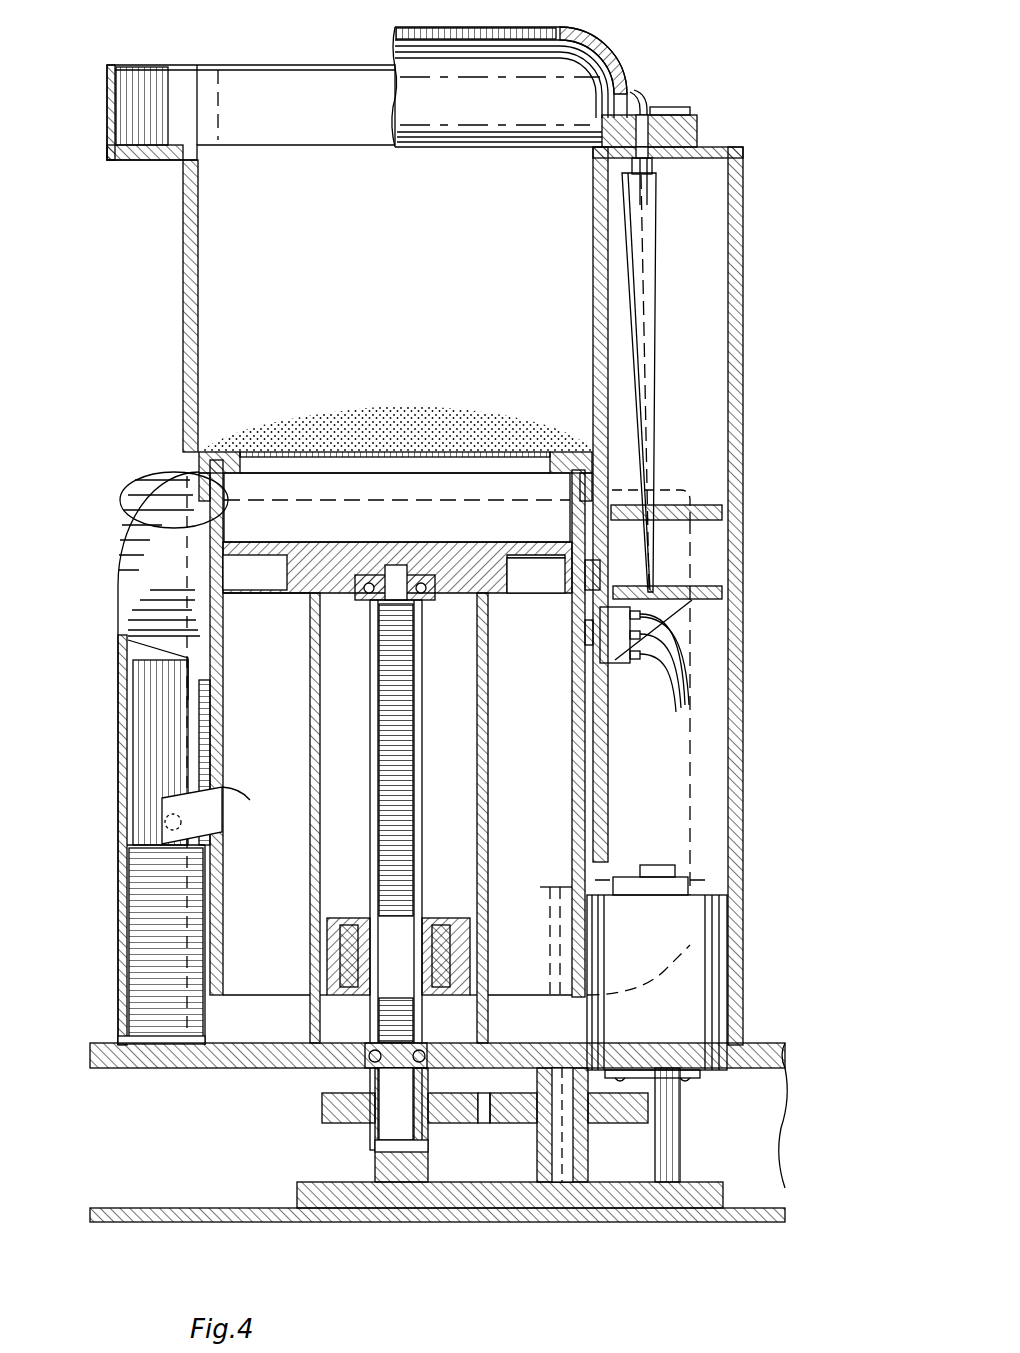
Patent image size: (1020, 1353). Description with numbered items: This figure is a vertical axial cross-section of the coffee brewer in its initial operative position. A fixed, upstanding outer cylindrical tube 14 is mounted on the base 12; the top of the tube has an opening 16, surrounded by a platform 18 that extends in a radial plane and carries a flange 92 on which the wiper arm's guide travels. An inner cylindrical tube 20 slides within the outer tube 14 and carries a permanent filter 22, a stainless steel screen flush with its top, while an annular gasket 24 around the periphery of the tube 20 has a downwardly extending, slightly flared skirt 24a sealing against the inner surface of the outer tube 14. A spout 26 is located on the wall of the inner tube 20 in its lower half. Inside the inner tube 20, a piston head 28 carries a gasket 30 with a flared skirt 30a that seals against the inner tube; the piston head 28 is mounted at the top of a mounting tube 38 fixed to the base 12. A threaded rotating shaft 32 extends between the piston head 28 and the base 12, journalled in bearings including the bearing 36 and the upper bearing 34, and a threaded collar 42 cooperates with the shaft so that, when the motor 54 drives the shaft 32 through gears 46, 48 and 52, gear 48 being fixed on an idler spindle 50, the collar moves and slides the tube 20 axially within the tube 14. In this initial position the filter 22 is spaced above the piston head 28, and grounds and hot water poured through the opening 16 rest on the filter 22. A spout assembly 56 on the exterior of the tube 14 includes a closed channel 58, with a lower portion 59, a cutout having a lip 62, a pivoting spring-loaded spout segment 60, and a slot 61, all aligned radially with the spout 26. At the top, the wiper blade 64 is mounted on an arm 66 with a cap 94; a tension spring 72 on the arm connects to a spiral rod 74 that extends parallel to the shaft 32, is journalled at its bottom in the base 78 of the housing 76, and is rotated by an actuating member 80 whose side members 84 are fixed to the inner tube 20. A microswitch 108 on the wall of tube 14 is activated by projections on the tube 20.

The base 12 is at (783, 1045).
The outer cylindrical tube 14 is at (178, 254).
The opening 16 is at (200, 152).
The platform 18 is at (160, 145).
The inner cylindrical tube 20 is at (228, 670).
The permanent filter 22 is at (330, 450).
The annular gasket 24 is at (220, 455).
The skirt 24a is at (178, 528).
The spout 26 is at (216, 826).
The piston head 28 is at (360, 545).
The gasket 30 is at (258, 570).
The flared skirt 30a is at (228, 582).
The rotating shaft 32 is at (392, 818).
The upper bearing 34 is at (357, 600).
The bearing 36 is at (382, 1055).
The mounting tube 38 is at (312, 722).
The threaded collar 42 is at (432, 920).
The gear 46 is at (448, 1120).
The gear 48 is at (620, 1120).
The idler spindle 50 is at (555, 1155).
The gear 52 is at (690, 1150).
The motor 54 is at (700, 1005).
The spout assembly 56 is at (117, 882).
The closed channel 58 is at (120, 938).
The hopper bottom 59 is at (122, 1040).
The pivoting spout segment 60 is at (150, 740).
The slot 61 is at (178, 778).
The lip 62 is at (128, 648).
The wiper blade 64 is at (440, 27).
The arm 66 is at (690, 130).
The tension spring 72 is at (636, 98).
The spiral rod 74 is at (650, 300).
The housing 76 is at (740, 378).
The base 78 is at (725, 597).
The actuating member 80 is at (703, 505).
The side members 84 is at (690, 738).
The flange 92 is at (107, 92).
The cap 94 is at (672, 107).
The microswitch 108 is at (615, 645).